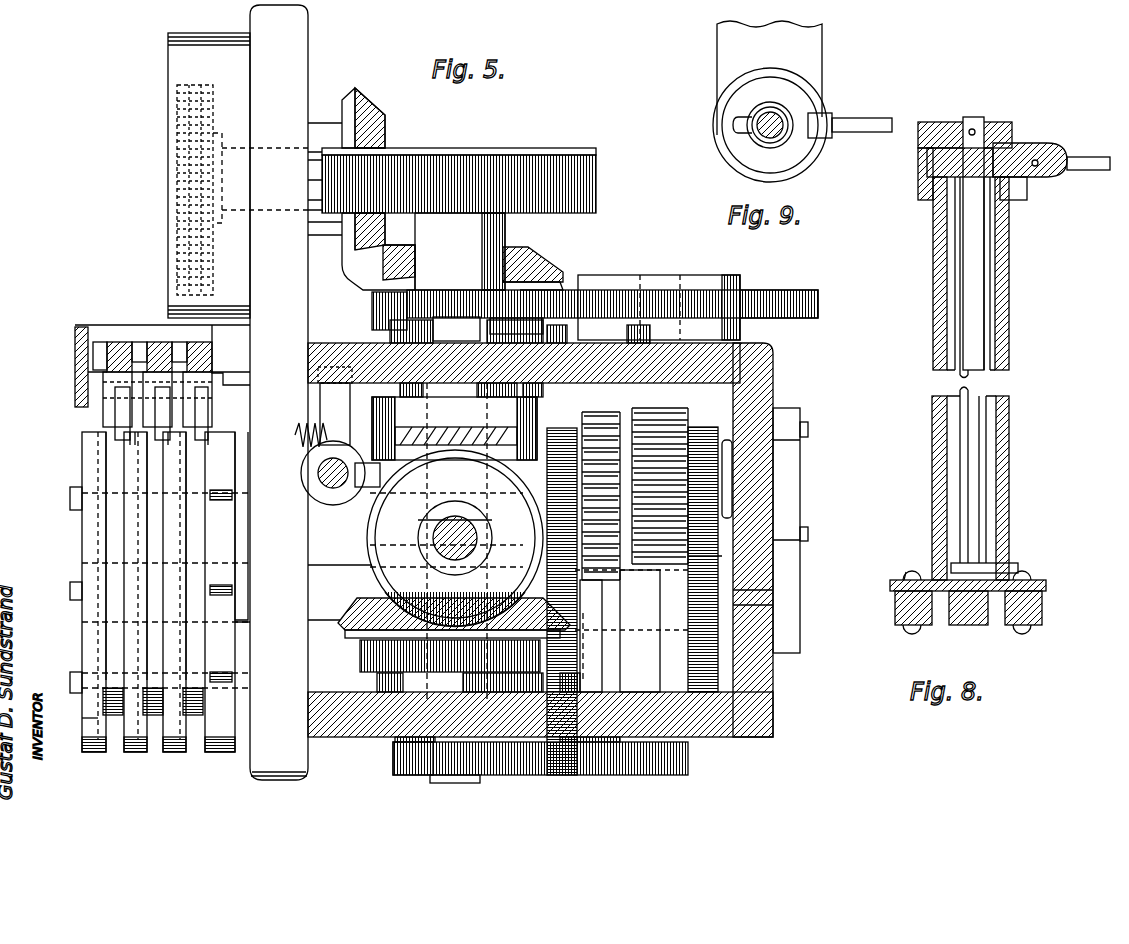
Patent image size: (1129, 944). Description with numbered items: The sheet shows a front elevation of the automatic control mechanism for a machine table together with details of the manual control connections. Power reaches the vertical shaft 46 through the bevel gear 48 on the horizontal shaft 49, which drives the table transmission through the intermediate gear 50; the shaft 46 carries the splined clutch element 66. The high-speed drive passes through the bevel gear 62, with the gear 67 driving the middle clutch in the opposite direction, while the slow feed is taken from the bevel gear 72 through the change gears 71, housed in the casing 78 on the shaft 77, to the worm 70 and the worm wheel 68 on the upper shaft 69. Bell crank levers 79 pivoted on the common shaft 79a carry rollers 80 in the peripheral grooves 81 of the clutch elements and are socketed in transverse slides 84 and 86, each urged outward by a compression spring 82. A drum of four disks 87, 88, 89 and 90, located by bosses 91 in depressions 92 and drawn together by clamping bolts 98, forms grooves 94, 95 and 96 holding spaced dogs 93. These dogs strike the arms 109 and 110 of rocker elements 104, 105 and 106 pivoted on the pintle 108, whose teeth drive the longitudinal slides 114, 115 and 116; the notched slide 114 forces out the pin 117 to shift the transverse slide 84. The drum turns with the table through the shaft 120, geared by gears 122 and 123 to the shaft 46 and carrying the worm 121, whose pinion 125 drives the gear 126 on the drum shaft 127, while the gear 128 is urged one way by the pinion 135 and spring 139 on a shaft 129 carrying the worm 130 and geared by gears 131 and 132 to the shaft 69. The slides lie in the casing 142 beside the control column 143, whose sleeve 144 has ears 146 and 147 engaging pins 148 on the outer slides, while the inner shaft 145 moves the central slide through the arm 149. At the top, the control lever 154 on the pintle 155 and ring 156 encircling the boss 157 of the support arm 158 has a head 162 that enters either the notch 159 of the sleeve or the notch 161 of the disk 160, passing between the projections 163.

In FIG. 5, the vertical shaft 46 is at (380, 747).
In FIG. 5, the bevel gear 48 is at (372, 575).
In FIG. 5, the horizontal shaft 49 is at (432, 522).
In FIG. 5, the intermediate gear 50 is at (360, 670).
In FIG. 5, the bevel gear 62 is at (546, 266).
In FIG. 5, the splined clutch element 66 is at (430, 447).
In FIG. 5, the gear 67 is at (372, 308).
In FIG. 5, the worm wheel 68 is at (575, 142).
In FIG. 5, the shaft 69 is at (506, 231).
In FIG. 5, the worm 70 is at (372, 411).
In FIG. 5, the change gears 71 is at (204, 90).
In FIG. 5, the bevel gear 72 is at (371, 116).
In FIG. 5, the parallel shaft 77 is at (260, 177).
In FIG. 5, the casing 78 is at (182, 62).
In FIG. 5, the bell crank lever 79 is at (331, 506).
In FIG. 5, the common shaft 79a is at (318, 475).
In FIG. 5, the roller 80 is at (366, 487).
In FIG. 5, the peripheral groove 81 is at (487, 533).
In FIG. 5, the compression spring 82 is at (318, 453).
In FIG. 5, the transverse slide 84 is at (75, 345).
In FIG. 5, the transverse slide 86 is at (276, 346).
In FIG. 5, the disk 87 is at (95, 752).
In FIG. 5, the disk 88 is at (136, 752).
In FIG. 5, the disk 89 is at (175, 752).
In FIG. 5, the disk 90 is at (222, 752).
In FIG. 5, the boss 91 is at (132, 672).
In FIG. 5, the depression 92 is at (96, 716).
In FIG. 5, the dog 93 is at (197, 435).
In FIG. 5, the groove 94 is at (115, 527).
In FIG. 5, the groove 95 is at (156, 540).
In FIG. 5, the groove 96 is at (196, 555).
In FIG. 5, the clamping bolt 98 is at (72, 500).
In FIG. 5, the rocker element 104 is at (112, 390).
In FIG. 5, the rocker element 105 is at (152, 400).
In FIG. 5, the rocker element 106 is at (192, 418).
In FIG. 5, the pintle 108 is at (238, 392).
In FIG. 5, the rocker arm 109 is at (206, 433).
In FIG. 5, the rocker arm 110 is at (192, 445).
In FIG. 5, the longitudinal slide 114 is at (110, 343).
In FIG. 8, the longitudinal slide 114 is at (906, 627).
In FIG. 5, the longitudinal slide 115 is at (150, 343).
In FIG. 8, the longitudinal slide 115 is at (968, 626).
In FIG. 5, the longitudinal slide 116 is at (186, 343).
In FIG. 8, the longitudinal slide 116 is at (1030, 627).
In FIG. 5, the pin 117 is at (356, 633).
In FIG. 5, the vertical shaft 120 is at (597, 636).
In FIG. 5, the worm 121 is at (582, 421).
In FIG. 5, the gear 122 is at (396, 768).
In FIG. 5, the gear 123 is at (568, 772).
In FIG. 5, the pinion 125 is at (490, 545).
In FIG. 5, the gear 126 is at (470, 567).
In FIG. 5, the shaft 127 is at (742, 598).
In FIG. 5, the gear 128 is at (722, 556).
In FIG. 5, the shaft 129 is at (632, 631).
In FIG. 5, the worm 130 is at (695, 408).
In FIG. 5, the gear 131 is at (458, 290).
In FIG. 5, the gear 132 is at (818, 306).
In FIG. 5, the pinion 135 is at (800, 413).
In FIG. 5, the compression spring 139 is at (734, 492).
In FIG. 5, the casing 142 is at (75, 335).
In FIG. 8, the vertical control column 143 is at (1008, 343).
In FIG. 8, the sleeve 144 is at (1010, 458).
In FIG. 9, the shaft 145 is at (748, 135).
In FIG. 8, the shaft 145 is at (988, 423).
In FIG. 8, the ear 146 is at (905, 580).
In FIG. 8, the ear 147 is at (1040, 580).
In FIG. 8, the pin 148 is at (912, 571).
In FIG. 8, the arm 149 is at (1012, 563).
In FIG. 9, the control lever 154 is at (878, 122).
In FIG. 8, the control lever 154 is at (1078, 156).
In FIG. 9, the horizontal pintle 155 is at (827, 117).
In FIG. 8, the horizontal pintle 155 is at (1043, 171).
In FIG. 9, the ring 156 is at (822, 140).
In FIG. 8, the ring 156 is at (922, 166).
In FIG. 9, the boss 157 is at (801, 150).
In FIG. 8, the boss 157 is at (921, 180).
In FIG. 9, the arm 158 is at (815, 51).
In FIG. 8, the notch 159 is at (1012, 196).
In FIG. 8, the disk 160 is at (949, 125).
In FIG. 8, the notch 161 is at (992, 147).
In FIG. 8, the head 162 is at (1012, 152).
In FIG. 9, the projections 163 is at (803, 115).